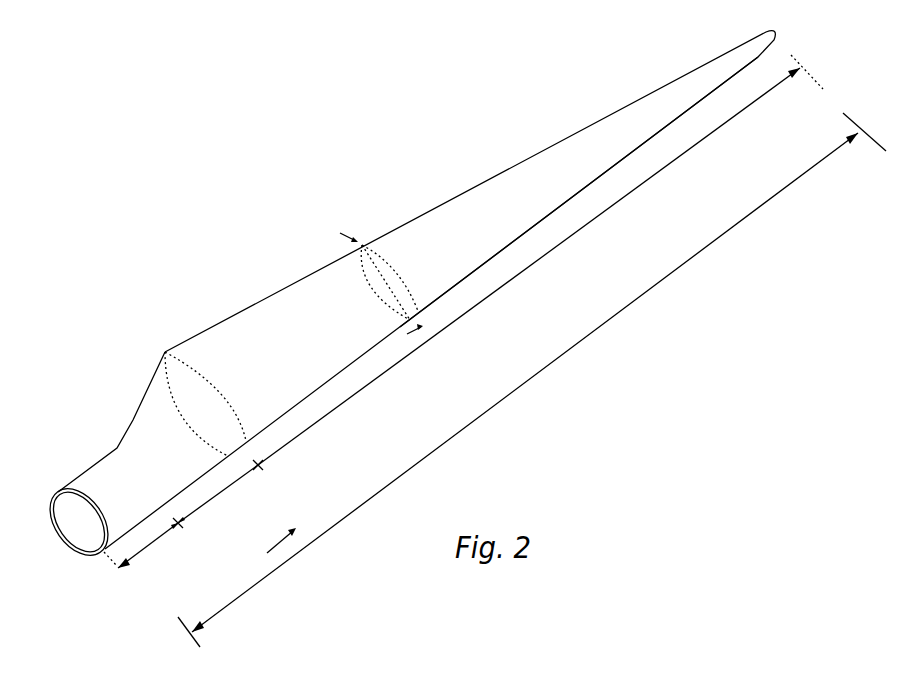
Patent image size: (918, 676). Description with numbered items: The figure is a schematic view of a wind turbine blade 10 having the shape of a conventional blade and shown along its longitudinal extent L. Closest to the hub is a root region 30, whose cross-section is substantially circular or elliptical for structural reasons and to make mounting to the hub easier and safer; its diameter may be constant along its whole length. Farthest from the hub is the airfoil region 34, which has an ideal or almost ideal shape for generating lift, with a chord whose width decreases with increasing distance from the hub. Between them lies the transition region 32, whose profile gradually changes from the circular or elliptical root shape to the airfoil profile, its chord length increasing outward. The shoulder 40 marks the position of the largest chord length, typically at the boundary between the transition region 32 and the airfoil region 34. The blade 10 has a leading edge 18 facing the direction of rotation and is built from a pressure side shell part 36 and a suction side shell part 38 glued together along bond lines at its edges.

The wind turbine blade 10 is at (282, 195).
The leading edge 18 is at (553, 214).
The root region 30 is at (150, 543).
The transition region 32 is at (221, 492).
The airfoil region 34 is at (477, 305).
The pressure side shell part 36 is at (77, 477).
The suction side shell part 38 is at (52, 496).
The shoulder 40 is at (167, 351).